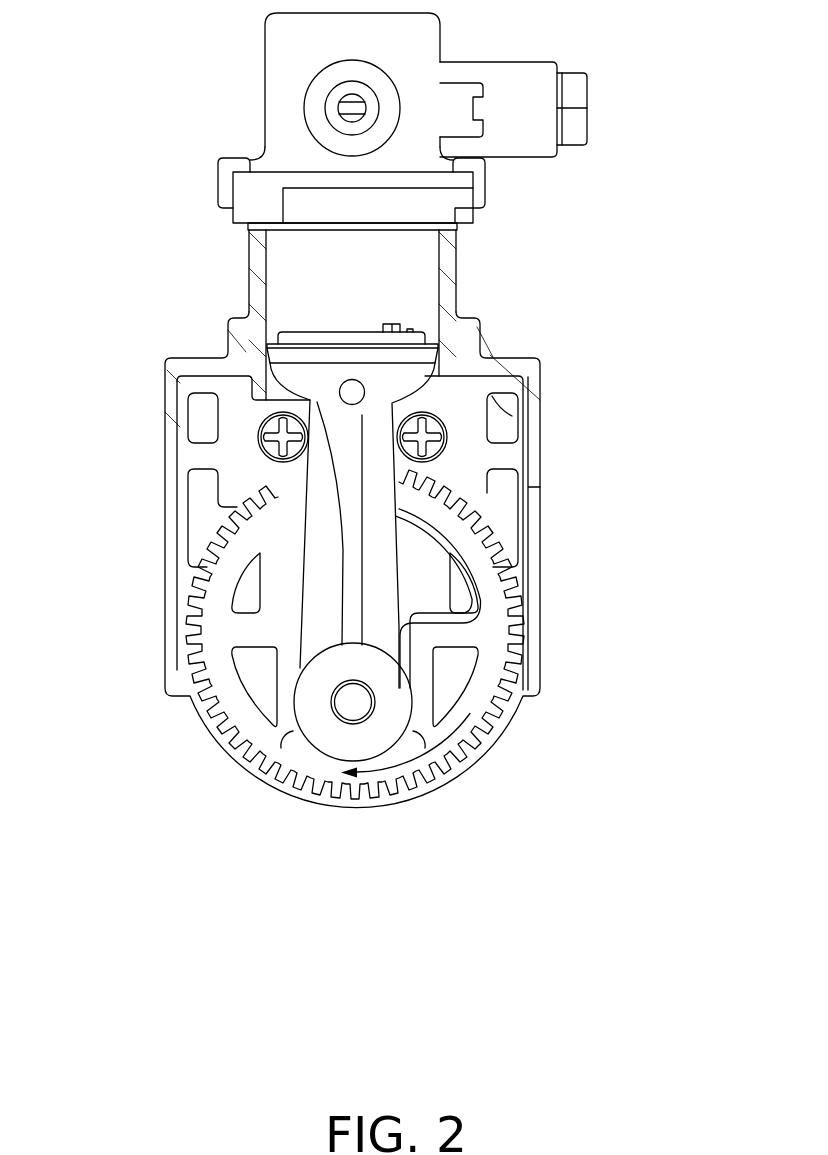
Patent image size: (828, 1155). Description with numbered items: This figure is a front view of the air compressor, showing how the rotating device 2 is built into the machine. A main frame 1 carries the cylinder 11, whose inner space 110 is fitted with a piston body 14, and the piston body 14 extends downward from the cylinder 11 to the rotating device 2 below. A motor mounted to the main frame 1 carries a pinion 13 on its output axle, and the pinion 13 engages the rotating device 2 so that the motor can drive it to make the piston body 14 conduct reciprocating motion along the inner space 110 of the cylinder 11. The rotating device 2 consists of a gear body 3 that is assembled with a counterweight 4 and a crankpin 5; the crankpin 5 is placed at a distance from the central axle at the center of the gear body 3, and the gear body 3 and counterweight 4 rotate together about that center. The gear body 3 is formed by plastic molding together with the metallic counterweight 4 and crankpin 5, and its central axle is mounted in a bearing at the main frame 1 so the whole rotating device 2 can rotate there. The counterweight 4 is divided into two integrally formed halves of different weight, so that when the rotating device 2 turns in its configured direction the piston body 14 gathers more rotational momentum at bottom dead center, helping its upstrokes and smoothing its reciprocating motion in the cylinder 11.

The main frame 1 is at (223, 463).
The rotating device 2 is at (545, 757).
The gear body 3 is at (233, 632).
The counterweight 4 is at (447, 594).
The crankpin 5 is at (357, 702).
The cylinder 11 is at (255, 256).
The inner space 110 is at (393, 280).
The pinion 13 is at (285, 413).
The piston body 14 is at (377, 553).